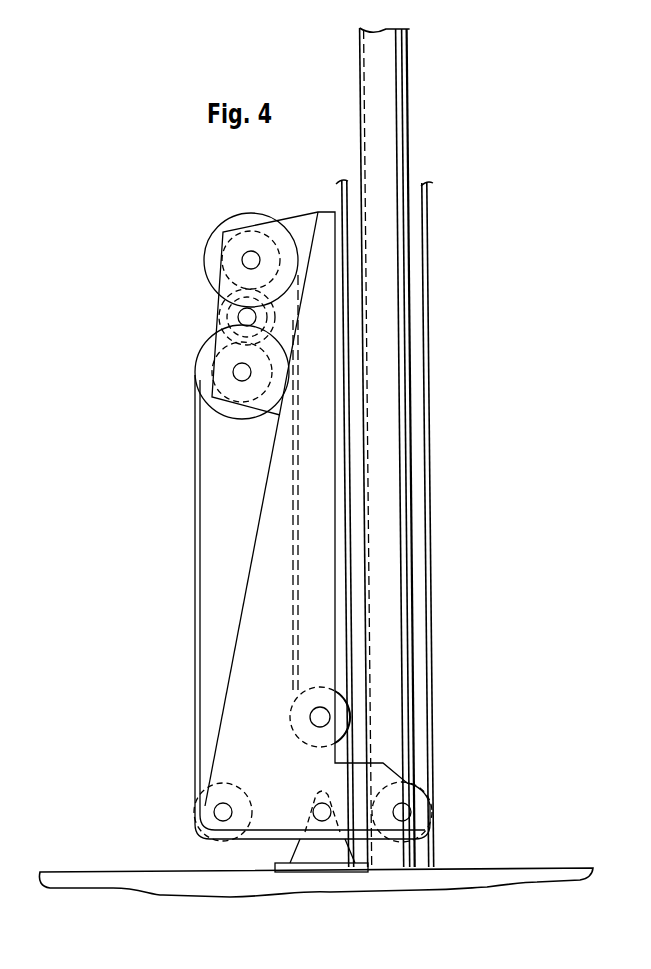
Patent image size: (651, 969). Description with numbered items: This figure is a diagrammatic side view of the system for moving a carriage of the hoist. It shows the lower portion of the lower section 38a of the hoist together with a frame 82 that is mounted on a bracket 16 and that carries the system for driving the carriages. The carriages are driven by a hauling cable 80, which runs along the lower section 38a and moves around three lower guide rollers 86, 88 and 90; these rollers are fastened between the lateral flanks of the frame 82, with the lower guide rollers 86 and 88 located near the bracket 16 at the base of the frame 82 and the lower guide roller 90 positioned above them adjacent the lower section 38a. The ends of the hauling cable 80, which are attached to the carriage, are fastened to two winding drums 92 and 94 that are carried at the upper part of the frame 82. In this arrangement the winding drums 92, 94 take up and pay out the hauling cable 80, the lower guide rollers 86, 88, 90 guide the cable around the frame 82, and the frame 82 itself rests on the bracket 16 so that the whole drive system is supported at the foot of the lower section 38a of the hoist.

The lower section 38a is at (392, 47).
The hauling cable 80 is at (427, 317).
The frame 82 is at (243, 655).
The lower guide roller 86 is at (202, 827).
The lower guide roller 88 is at (428, 805).
The lower guide roller 90 is at (347, 705).
The winding drum 92 is at (210, 350).
The winding drum 94 is at (220, 223).
The bracket 16 is at (478, 873).